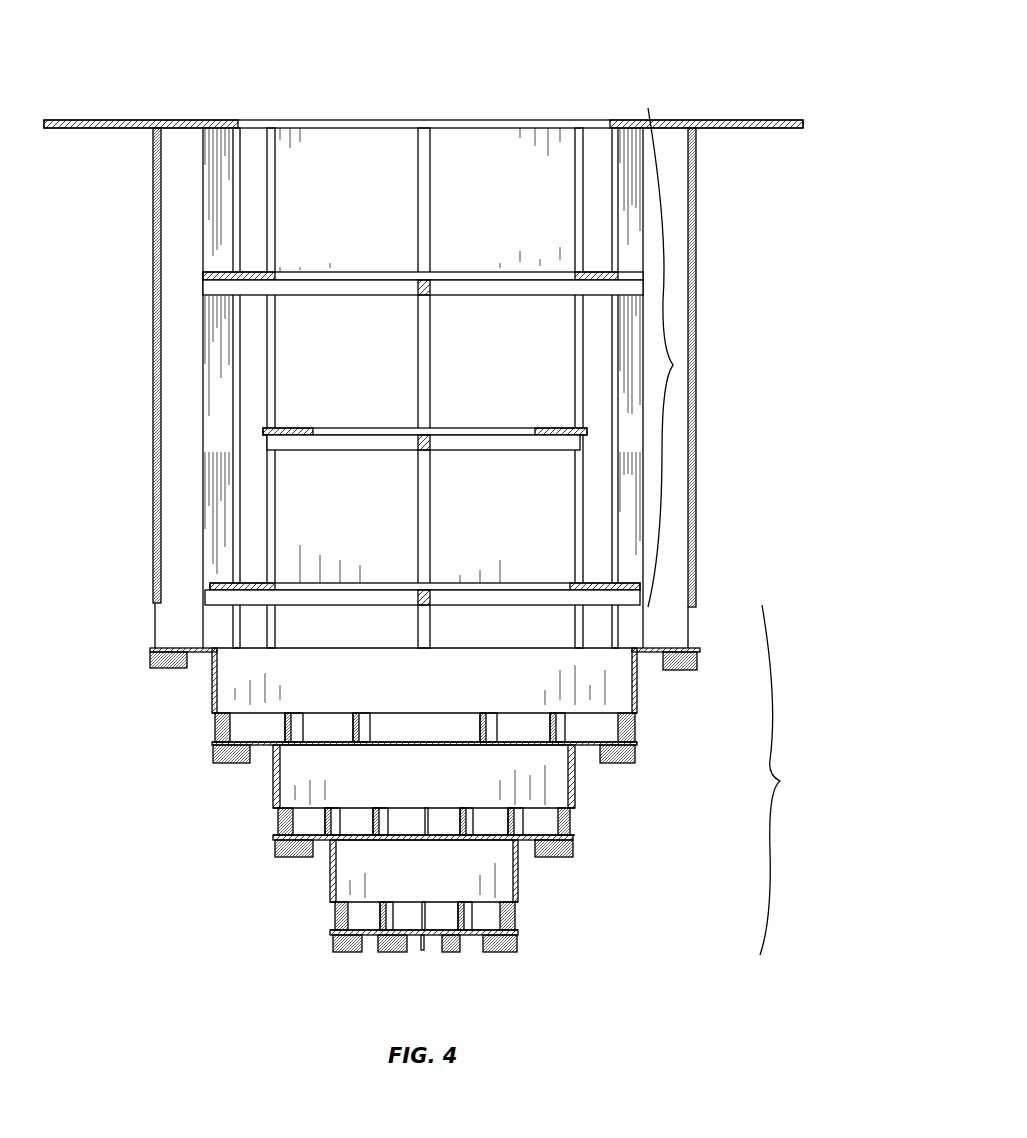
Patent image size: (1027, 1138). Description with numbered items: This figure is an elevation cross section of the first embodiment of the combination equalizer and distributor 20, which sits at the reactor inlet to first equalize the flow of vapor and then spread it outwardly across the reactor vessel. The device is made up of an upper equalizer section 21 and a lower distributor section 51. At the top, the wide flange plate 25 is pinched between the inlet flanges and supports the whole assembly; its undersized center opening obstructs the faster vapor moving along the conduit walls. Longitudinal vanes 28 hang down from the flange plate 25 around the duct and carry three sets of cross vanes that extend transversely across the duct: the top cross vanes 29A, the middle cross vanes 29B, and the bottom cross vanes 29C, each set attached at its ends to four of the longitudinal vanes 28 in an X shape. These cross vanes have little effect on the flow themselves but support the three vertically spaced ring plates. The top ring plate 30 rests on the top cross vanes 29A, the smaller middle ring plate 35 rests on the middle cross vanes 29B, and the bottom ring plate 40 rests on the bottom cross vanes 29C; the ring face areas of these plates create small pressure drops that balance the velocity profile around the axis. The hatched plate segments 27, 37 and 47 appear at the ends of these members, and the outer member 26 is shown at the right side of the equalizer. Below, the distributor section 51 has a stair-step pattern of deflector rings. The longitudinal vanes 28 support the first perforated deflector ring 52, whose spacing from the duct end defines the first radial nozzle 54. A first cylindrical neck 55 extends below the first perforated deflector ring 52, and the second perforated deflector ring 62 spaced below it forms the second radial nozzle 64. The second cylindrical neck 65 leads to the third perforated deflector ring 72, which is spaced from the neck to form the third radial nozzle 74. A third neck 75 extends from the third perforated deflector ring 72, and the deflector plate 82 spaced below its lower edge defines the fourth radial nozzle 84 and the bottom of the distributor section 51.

The combination equalizer and distributor 20 is at (212, 48).
The flange plate 25 is at (772, 120).
The longitudinal vanes 28 is at (429, 388).
The plate of cross beam 27 is at (245, 275).
The top ring plate 30 is at (423, 289).
The top cross vanes 29A is at (332, 292).
The middle cross vanes 29B is at (372, 452).
The bottom cross vanes 29C is at (330, 605).
The middle ring plate 35 is at (425, 449).
The plate segment 37 is at (563, 428).
The plate segment 47 is at (240, 583).
The bottom ring plate 40 is at (422, 596).
The equalizer section 21 is at (675, 366).
The outer column 26 is at (697, 447).
The first perforated deflector ring 52 is at (213, 648).
The first radial nozzle 54 is at (459, 684).
The first cylindrical neck 55 is at (640, 688).
The second radial nozzle 64 is at (645, 729).
The second perforated deflector ring 62 is at (278, 742).
The second cylindrical neck 65 is at (424, 744).
The third radial nozzle 74 is at (580, 822).
The third perforated deflector ring 72 is at (310, 835).
The third neck 75 is at (423, 839).
The fourth radial nozzle 84 is at (522, 915).
The deflector plate 82 is at (458, 940).
The distributor section 51 is at (786, 780).